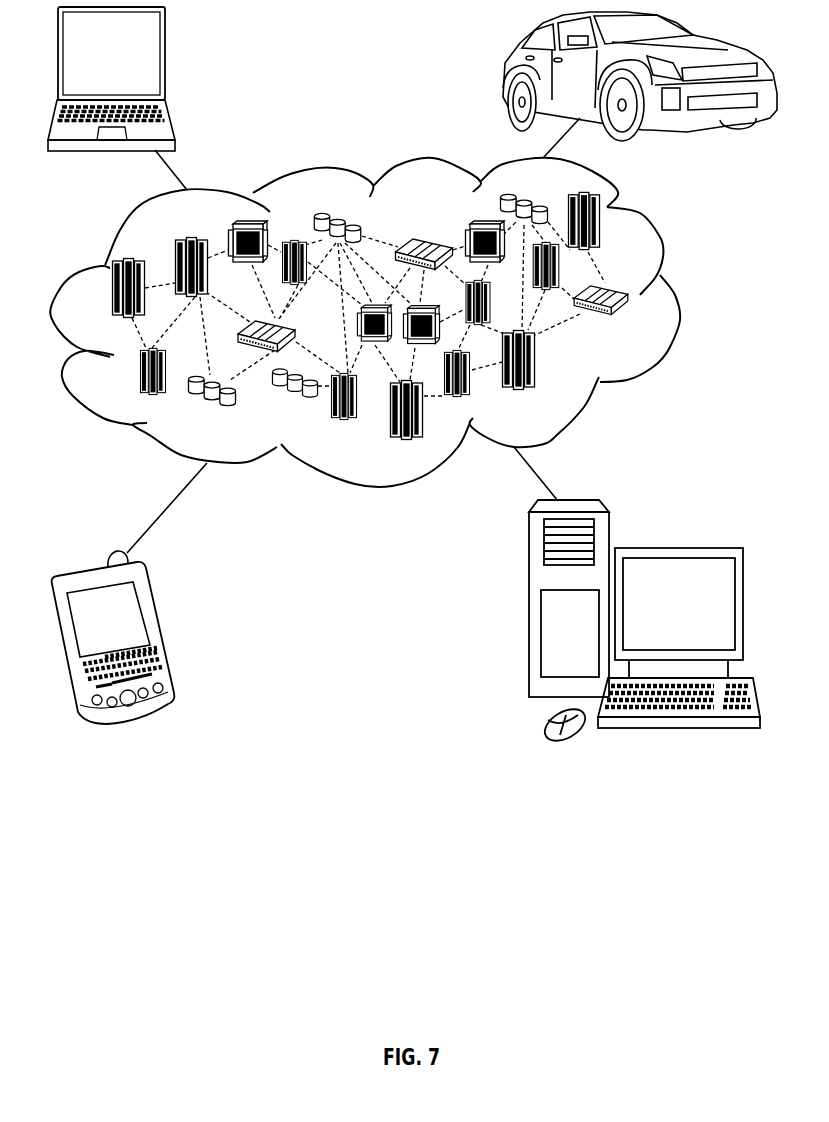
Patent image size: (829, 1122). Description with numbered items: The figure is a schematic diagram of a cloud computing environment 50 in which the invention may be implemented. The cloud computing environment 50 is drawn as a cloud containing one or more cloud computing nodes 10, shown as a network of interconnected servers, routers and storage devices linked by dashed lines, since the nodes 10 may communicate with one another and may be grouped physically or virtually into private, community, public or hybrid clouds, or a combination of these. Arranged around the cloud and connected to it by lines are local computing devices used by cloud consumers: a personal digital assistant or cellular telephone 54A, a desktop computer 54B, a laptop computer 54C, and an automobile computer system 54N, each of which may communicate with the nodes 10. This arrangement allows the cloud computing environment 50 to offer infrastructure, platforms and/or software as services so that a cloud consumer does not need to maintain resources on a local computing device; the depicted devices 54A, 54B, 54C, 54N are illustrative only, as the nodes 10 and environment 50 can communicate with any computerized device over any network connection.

The cloud computing node 10 is at (648, 331).
The cloud computing environment 50 is at (676, 298).
The personal digital assistant or cellular telephone 54A is at (158, 626).
The desktop computer 54B is at (675, 548).
The laptop computer 54C is at (165, 60).
The automobile computer system 54N is at (508, 73).